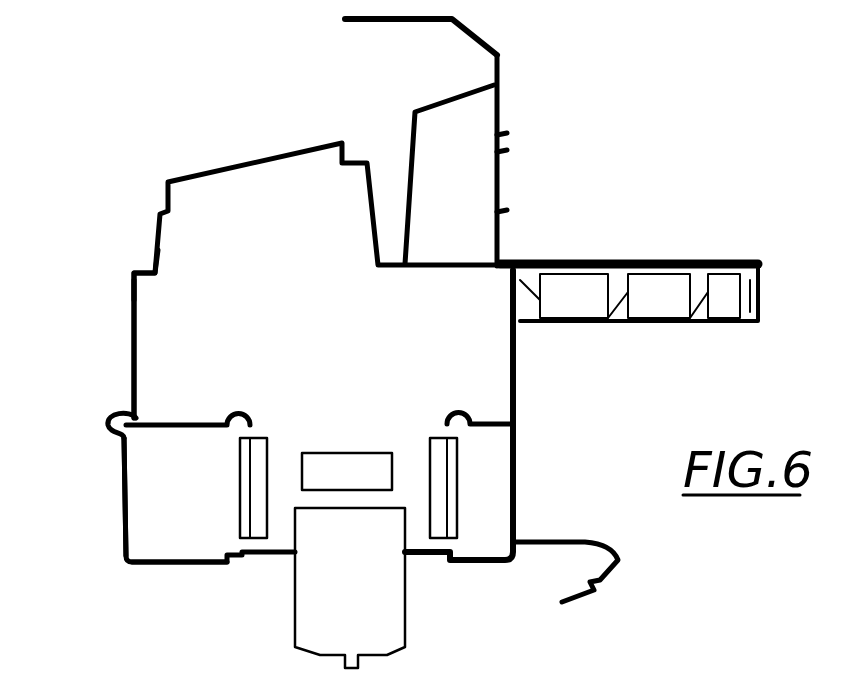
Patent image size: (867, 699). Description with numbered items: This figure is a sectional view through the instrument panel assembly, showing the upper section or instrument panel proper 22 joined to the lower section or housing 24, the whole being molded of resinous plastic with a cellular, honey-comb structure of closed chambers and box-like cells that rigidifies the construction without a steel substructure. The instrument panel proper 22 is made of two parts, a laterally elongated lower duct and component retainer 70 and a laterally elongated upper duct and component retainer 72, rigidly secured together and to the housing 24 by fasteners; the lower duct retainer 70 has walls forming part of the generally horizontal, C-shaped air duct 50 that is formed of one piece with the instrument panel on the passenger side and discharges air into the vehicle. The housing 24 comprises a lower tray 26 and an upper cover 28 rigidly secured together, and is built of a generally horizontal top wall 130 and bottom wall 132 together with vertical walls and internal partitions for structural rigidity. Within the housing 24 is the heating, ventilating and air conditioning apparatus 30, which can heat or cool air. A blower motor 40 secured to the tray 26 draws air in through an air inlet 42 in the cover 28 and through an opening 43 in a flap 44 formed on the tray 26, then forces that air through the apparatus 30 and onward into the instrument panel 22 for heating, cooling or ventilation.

The upper section 22 is at (496, 41).
The lower duct and component retainer 70 is at (500, 100).
The upper duct and component retainer 72 is at (413, 130).
The air duct 50 is at (478, 194).
The air inlet 42 is at (175, 182).
The top wall 130 is at (138, 270).
The upper cover 28 is at (132, 328).
The housing 24 is at (98, 400).
The flap 44 is at (176, 423).
The opening 43 is at (447, 420).
The heating, ventilating and air conditioning apparatus 30 is at (470, 484).
The lower tray 26 is at (123, 507).
The bottom wall 132 is at (193, 570).
The blower motor 40 is at (406, 618).